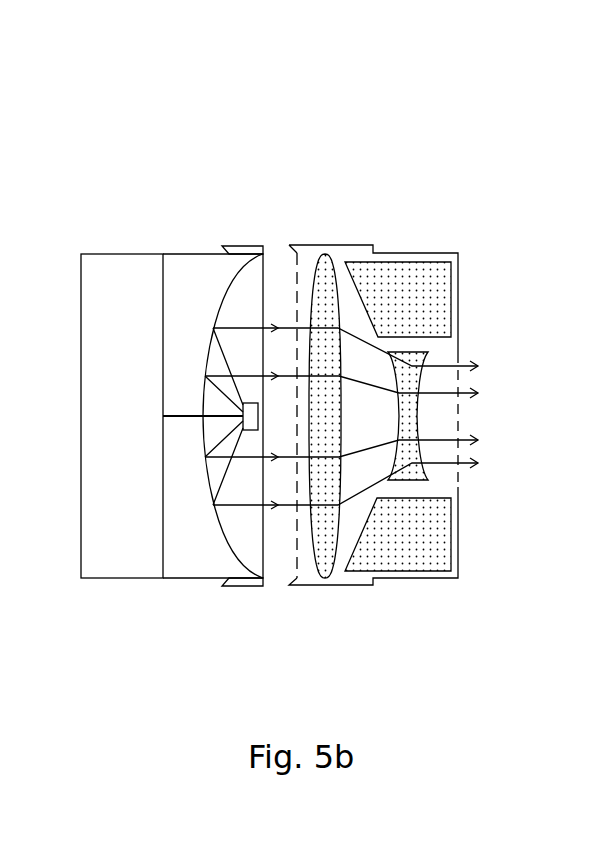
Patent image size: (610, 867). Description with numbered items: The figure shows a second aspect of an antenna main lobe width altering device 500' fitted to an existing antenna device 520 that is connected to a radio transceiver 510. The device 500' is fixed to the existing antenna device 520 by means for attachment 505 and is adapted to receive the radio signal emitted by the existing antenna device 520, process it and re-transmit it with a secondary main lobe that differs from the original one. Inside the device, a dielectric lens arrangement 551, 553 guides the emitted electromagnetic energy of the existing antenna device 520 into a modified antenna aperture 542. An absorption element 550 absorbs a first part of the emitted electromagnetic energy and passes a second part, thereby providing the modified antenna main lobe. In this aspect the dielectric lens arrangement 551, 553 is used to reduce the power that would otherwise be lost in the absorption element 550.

The antenna main lobe width altering device 500' is at (505, 94).
The radio transceiver 510 is at (118, 254).
The existing antenna device 520 is at (198, 254).
The means for attachment 505 is at (326, 236).
The dielectric lens arrangement 551 is at (327, 580).
The absorption element 550 is at (452, 297).
The dielectric lens arrangement 553 is at (415, 407).
The modified antenna aperture 542 is at (494, 392).